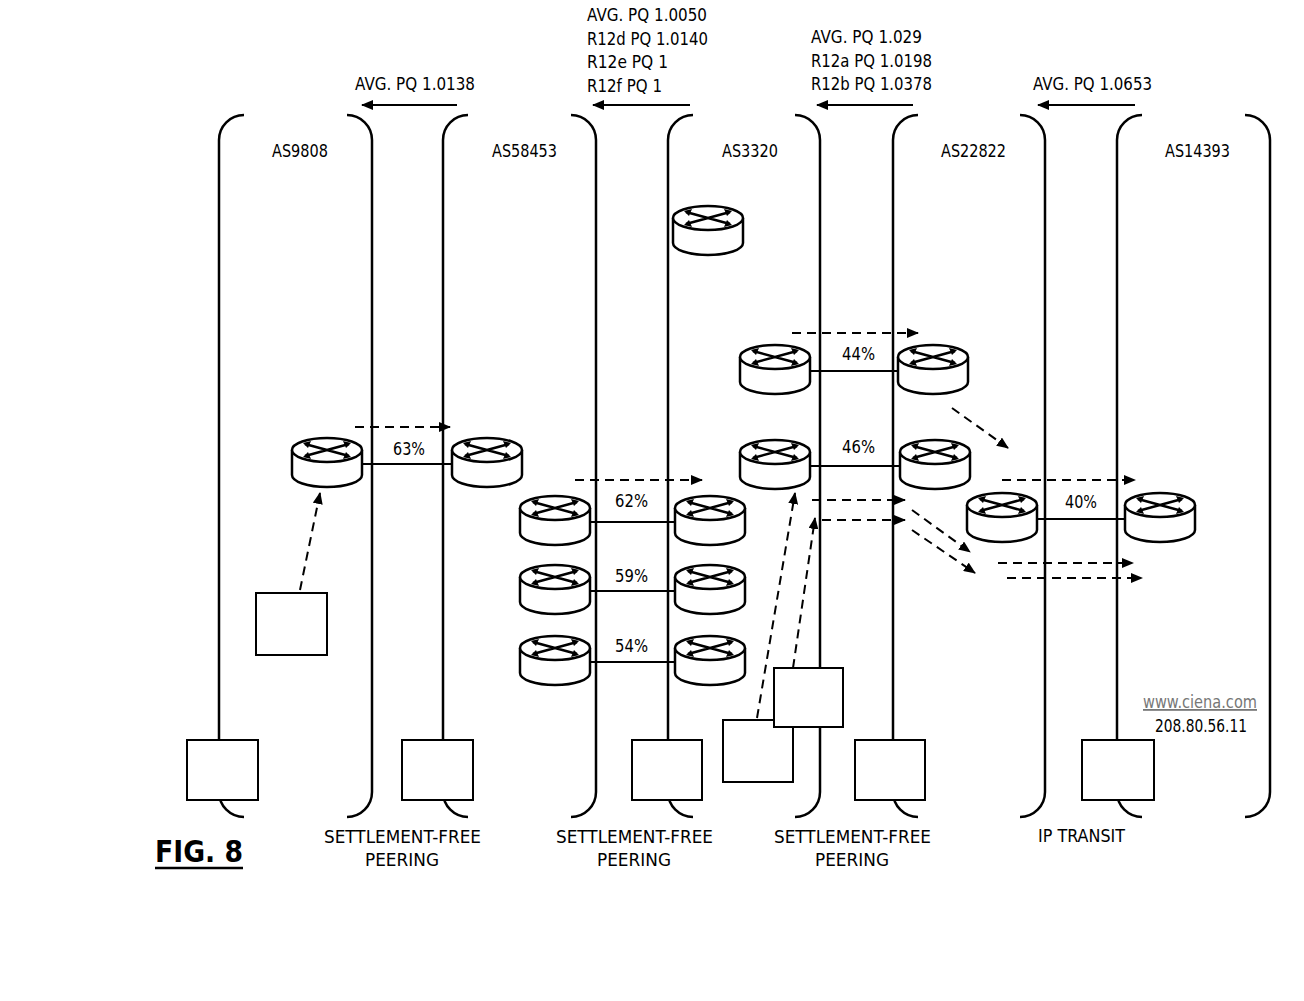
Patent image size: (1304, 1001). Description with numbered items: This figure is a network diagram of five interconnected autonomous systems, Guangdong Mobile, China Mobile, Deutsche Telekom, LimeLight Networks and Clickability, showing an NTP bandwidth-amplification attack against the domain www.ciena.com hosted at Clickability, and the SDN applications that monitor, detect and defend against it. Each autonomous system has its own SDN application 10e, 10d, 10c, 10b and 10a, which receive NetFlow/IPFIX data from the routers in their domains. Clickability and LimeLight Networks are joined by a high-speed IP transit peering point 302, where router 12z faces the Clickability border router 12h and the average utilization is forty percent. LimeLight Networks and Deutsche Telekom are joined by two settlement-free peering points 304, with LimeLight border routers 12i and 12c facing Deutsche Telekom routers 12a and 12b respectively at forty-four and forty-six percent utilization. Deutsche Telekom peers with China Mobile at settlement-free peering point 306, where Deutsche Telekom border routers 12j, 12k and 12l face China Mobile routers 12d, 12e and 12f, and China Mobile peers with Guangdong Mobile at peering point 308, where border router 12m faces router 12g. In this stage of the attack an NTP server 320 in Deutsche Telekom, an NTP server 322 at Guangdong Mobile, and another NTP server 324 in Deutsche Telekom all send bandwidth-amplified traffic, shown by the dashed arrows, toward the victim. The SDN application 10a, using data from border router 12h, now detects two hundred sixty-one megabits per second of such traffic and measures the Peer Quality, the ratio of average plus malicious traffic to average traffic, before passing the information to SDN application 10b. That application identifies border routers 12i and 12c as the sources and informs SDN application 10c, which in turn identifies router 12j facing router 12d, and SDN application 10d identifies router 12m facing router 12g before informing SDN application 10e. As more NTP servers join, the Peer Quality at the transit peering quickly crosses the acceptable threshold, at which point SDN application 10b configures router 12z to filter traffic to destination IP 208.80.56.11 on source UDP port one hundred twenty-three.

The SDN application 10a is at (1104, 793).
The SDN application 10b is at (876, 793).
The SDN application 10c is at (653, 793).
The SDN application 10d is at (423, 793).
The SDN application 10e is at (208, 793).
The router 12a is at (803, 348).
The router 12b is at (803, 440).
The border router 12c is at (952, 445).
The router 12d is at (517, 520).
The router 12e is at (517, 592).
The router 12f is at (517, 662).
The router 12g is at (287, 473).
The border router 12h is at (1167, 497).
The border router 12i is at (953, 350).
The border router 12j is at (745, 522).
The router 12k is at (745, 591).
The router 12l is at (740, 640).
The border router 12m is at (503, 445).
The router 12z is at (1027, 498).
The peering point 302 is at (1102, 458).
The peering points 304 is at (882, 325).
The peering point 306 is at (657, 471).
The peering point 308 is at (433, 405).
The NTP server 320 is at (744, 773).
The NTP server 322 is at (277, 645).
The NTP server 324 is at (794, 720).